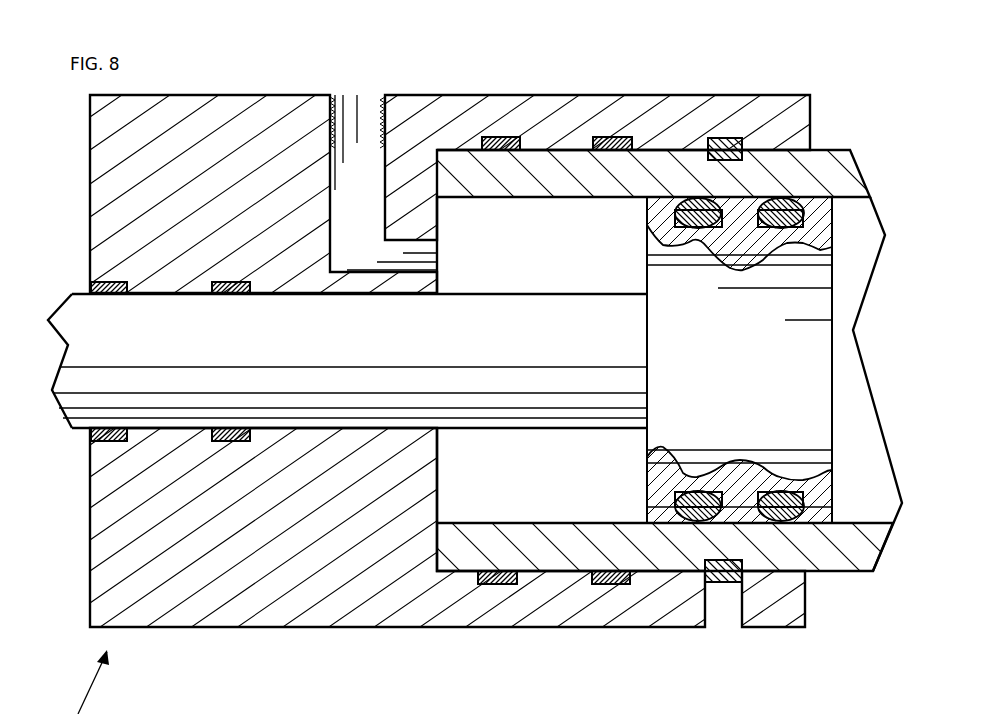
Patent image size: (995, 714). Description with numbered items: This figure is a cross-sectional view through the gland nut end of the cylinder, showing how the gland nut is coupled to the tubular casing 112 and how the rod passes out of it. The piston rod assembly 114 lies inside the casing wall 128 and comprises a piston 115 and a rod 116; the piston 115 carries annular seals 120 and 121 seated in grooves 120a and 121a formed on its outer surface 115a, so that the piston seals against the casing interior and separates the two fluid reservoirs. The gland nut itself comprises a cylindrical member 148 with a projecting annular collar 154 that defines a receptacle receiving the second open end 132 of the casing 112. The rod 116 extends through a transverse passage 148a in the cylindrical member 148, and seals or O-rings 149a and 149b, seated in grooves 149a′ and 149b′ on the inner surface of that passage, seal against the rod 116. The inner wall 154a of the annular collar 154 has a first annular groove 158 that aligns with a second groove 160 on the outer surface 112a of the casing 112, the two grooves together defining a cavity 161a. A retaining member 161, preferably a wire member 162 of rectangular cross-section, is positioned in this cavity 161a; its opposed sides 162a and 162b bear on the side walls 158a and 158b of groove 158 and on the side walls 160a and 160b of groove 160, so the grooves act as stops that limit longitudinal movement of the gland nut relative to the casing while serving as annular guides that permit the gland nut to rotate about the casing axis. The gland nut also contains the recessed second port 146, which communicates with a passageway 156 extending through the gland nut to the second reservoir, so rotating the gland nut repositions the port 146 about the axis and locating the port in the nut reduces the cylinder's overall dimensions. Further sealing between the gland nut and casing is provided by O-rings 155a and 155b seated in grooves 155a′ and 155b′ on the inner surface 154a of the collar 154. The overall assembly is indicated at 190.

The cylindrical casing 112 is at (838, 563).
The outer surface of cylindrical casing 112a is at (812, 573).
The piston rod assembly 114 is at (854, 365).
The piston 115 is at (820, 482).
The outer surface of piston 115a is at (828, 520).
The rod 116 is at (490, 400).
The annular seal 120 is at (637, 520).
The groove 120a is at (652, 490).
The annular seal 121 is at (863, 563).
The groove 121a is at (790, 490).
The casing wall 128 is at (837, 163).
The second open end 132 is at (427, 570).
The second port 146 is at (346, 97).
The cylindrical member 148 is at (177, 627).
The transverse passage 148a is at (140, 294).
The seal or O-ring 149a is at (86, 433).
The seal or O-ring 149b is at (225, 440).
The groove 149a′ is at (116, 296).
The groove 149b′ is at (234, 296).
The annular collar 154 is at (620, 615).
The inner wall of annular collar 154a is at (665, 560).
The annular seal or O-ring 155a is at (510, 584).
The annular seal or O-ring 155b is at (600, 585).
The groove 155a′ is at (505, 135).
The groove 155b′ is at (612, 135).
The passageway 156 is at (340, 197).
The first annular groove or slot 158 is at (740, 147).
The side wall of first groove 158a is at (707, 147).
The side wall of first groove 158b is at (743, 143).
The second groove 160 is at (738, 200).
The side wall of second groove 160a is at (570, 198).
The side wall of second groove 160b is at (812, 160).
The retaining member 161 is at (720, 590).
The cavity 161a is at (727, 137).
The wire member 162 is at (708, 143).
The side of wire member 162a is at (655, 170).
The side of wire member 162b is at (843, 191).
The assembly 190 is at (264, 707).